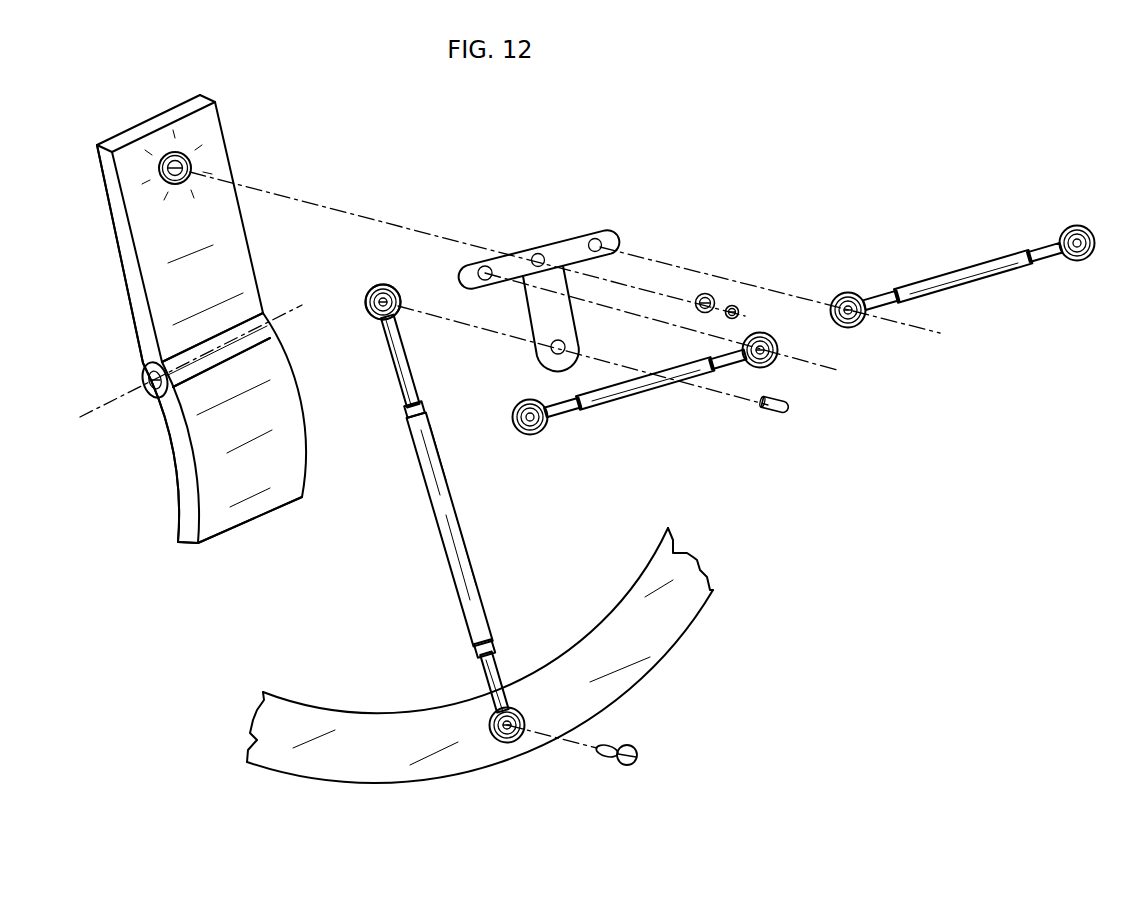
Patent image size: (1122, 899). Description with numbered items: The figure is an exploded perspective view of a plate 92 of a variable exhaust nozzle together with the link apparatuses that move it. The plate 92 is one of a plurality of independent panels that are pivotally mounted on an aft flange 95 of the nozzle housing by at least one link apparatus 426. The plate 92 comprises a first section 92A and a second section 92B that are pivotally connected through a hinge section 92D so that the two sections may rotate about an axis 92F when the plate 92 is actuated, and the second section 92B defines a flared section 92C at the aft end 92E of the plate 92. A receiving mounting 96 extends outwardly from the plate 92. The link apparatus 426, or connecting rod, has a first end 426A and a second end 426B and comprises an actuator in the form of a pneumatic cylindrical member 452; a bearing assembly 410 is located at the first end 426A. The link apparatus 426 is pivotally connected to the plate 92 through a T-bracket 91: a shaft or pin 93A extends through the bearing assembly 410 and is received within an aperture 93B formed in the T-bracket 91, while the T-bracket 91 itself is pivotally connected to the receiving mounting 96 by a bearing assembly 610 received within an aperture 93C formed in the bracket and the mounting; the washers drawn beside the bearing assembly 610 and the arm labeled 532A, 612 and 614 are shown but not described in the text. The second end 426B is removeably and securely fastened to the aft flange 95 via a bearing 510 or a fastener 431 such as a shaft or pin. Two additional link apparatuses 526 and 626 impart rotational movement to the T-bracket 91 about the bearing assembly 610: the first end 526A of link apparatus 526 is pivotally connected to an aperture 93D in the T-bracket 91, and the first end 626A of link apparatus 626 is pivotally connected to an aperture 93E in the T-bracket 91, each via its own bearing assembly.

The T-bracket 91 is at (565, 235).
The plate 92 is at (129, 291).
The first section 92A is at (111, 213).
The second section 92B is at (170, 448).
The flared section 92C is at (177, 531).
The hinge section 92D is at (143, 378).
The aft end 92E is at (166, 490).
The axis 92F is at (168, 368).
The pin 93A is at (773, 413).
The aperture 93B is at (579, 342).
The aperture 93C is at (539, 256).
The aperture 93D is at (463, 278).
The aperture 93E is at (613, 246).
The aft flange 95 is at (683, 617).
The receiving mounting 96 is at (168, 153).
The bearing assembly 410 is at (397, 284).
The link apparatus 426 is at (429, 526).
The first end 426A is at (363, 293).
The second end 426B is at (465, 662).
The fastener 431 is at (607, 759).
The pneumatic cylindrical member 452 is at (456, 512).
The bearing 510 is at (523, 745).
The link apparatus 526 is at (687, 408).
The first end 526A is at (780, 363).
The upper link arm 532A is at (414, 326).
The bearing assembly 610 is at (729, 227).
The small washer 612 is at (733, 305).
The washer 614 is at (707, 253).
The link apparatus 626 is at (958, 241).
The first end 626A is at (863, 291).